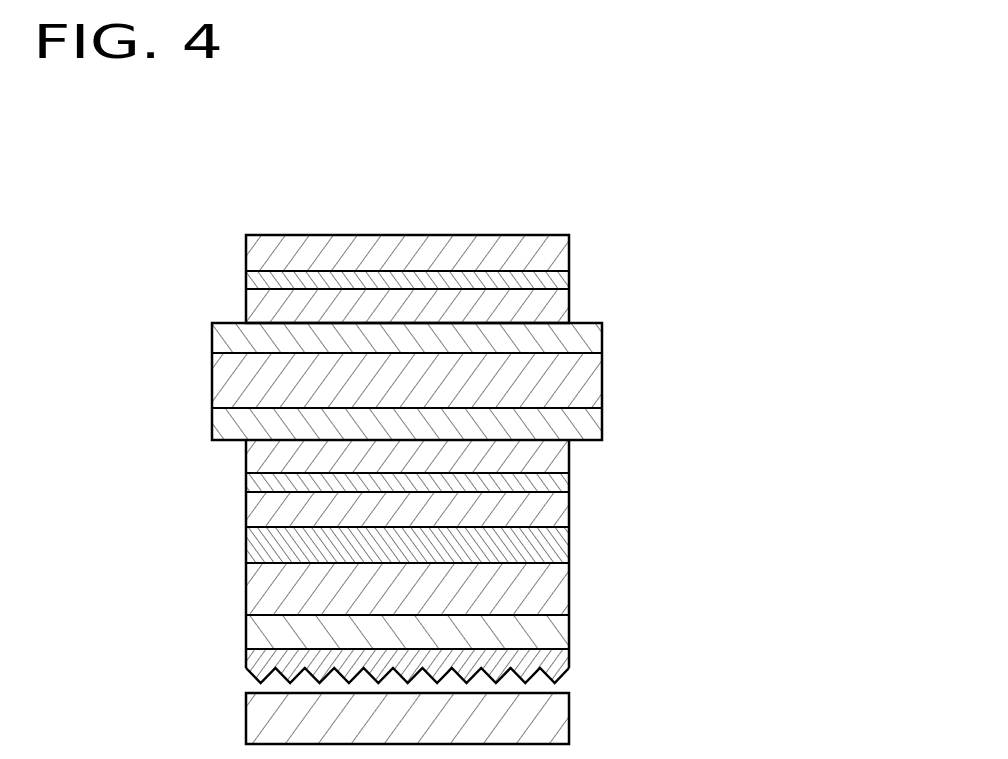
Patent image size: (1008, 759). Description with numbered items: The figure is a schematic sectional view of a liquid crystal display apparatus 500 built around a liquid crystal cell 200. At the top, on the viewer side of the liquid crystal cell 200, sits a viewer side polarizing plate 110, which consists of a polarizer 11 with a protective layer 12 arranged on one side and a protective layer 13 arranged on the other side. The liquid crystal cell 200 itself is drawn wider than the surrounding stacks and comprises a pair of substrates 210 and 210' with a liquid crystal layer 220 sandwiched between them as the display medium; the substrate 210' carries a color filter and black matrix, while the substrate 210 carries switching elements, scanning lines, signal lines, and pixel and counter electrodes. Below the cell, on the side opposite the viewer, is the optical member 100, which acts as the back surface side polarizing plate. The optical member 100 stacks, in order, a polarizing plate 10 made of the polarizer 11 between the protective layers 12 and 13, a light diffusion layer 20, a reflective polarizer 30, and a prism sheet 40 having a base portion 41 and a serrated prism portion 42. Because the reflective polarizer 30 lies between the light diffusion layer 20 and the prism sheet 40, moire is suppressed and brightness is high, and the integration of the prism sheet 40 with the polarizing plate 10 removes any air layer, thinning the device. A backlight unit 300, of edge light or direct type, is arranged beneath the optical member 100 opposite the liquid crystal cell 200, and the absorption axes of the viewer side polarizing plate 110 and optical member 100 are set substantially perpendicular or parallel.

The liquid crystal display apparatus 500 is at (620, 173).
The optical member 100 is at (710, 657).
The polarizing plate 10 is at (650, 438).
The polarizer 11 is at (569, 279).
The protective layer 12 is at (569, 253).
The protective layer 13 is at (569, 303).
The light diffusion layer 20 is at (568, 543).
The reflective polarizer 30 is at (568, 590).
The prism sheet 40 is at (650, 612).
The base portion 41 is at (568, 628).
The prism portion 42 is at (568, 662).
The viewer side polarizing plate 110 is at (713, 230).
The liquid crystal cell 200 is at (713, 317).
The substrate 210 is at (452, 421).
The substrate 210' is at (455, 335).
The liquid crystal layer 220 is at (602, 385).
The backlight unit 300 is at (568, 725).